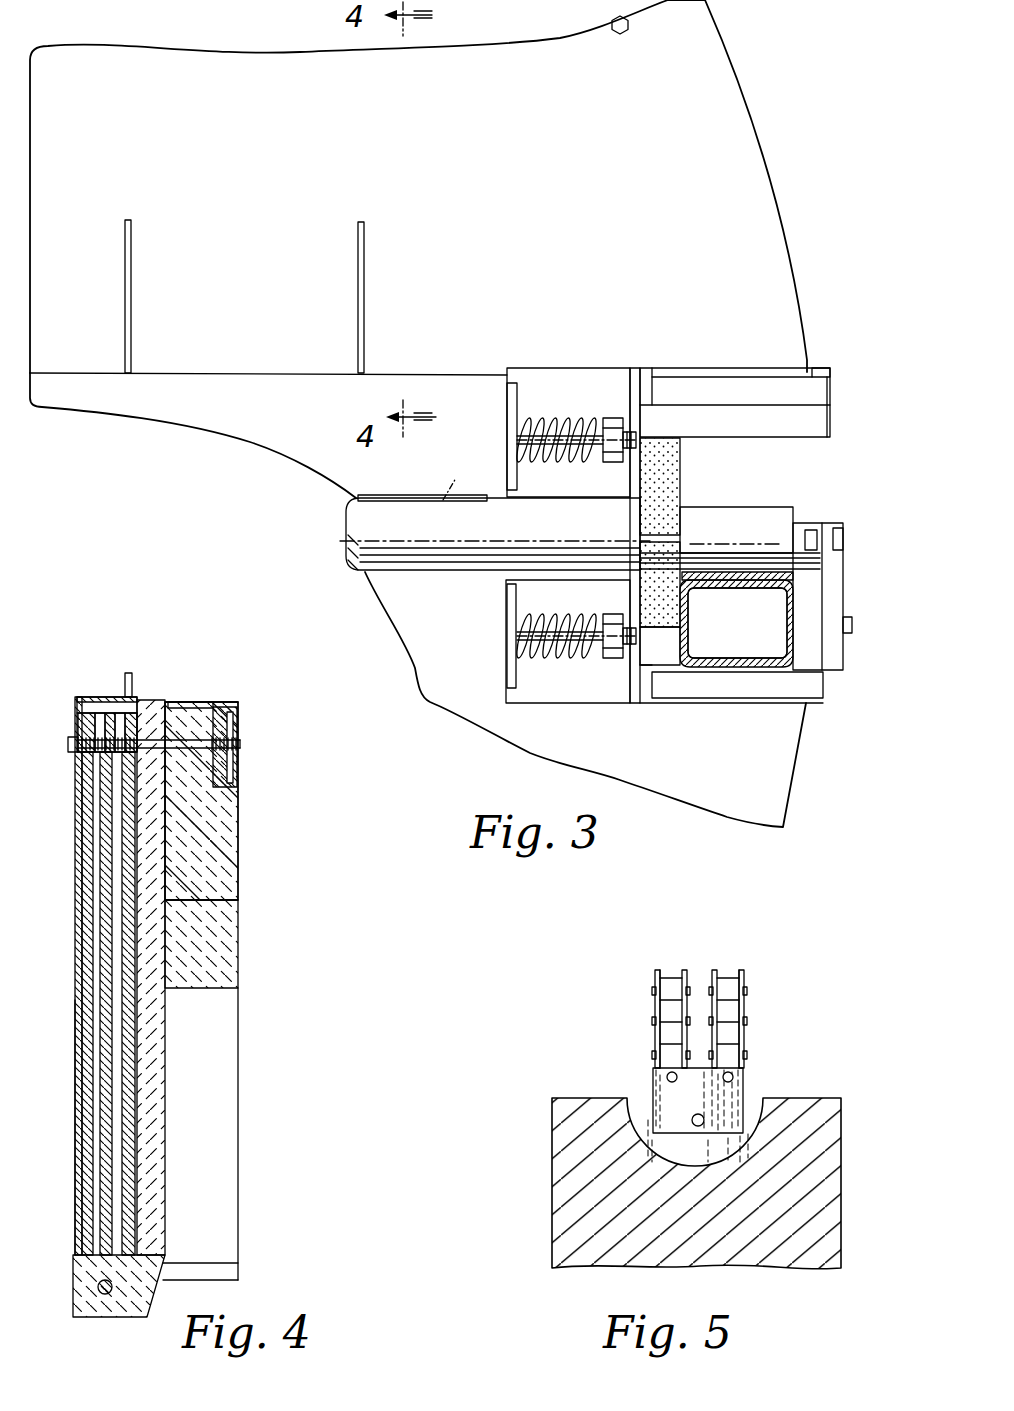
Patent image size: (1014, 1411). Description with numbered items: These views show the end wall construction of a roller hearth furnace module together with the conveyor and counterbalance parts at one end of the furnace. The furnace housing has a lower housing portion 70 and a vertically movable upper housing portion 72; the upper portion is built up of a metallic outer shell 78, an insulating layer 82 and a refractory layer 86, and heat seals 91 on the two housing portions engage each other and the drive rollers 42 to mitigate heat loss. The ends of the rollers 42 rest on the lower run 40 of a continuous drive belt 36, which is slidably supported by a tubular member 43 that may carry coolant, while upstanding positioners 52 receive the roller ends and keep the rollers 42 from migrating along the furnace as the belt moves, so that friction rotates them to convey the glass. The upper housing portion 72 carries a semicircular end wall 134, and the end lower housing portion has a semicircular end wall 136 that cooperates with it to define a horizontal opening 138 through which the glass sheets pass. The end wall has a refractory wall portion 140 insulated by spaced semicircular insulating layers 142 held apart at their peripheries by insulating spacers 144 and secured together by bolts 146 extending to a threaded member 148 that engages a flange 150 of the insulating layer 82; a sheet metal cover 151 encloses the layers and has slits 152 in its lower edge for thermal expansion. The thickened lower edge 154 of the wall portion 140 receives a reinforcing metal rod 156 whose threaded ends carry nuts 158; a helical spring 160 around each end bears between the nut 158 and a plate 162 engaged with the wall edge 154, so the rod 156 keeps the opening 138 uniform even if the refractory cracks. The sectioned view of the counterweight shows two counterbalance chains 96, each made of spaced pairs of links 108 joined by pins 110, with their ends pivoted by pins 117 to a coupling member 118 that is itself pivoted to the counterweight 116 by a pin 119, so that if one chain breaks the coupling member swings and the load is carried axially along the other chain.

In FIG. 3, the drive belt 36 is at (722, 608).
In FIG. 3, the lower run 40 is at (737, 623).
In FIG. 3, the drive roller 42 is at (786, 480).
In FIG. 3, the tubular member 43 is at (805, 618).
In FIG. 3, the positioner 52 is at (830, 560).
In FIG. 3, the lower housing portion 70 is at (806, 797).
In FIG. 3, the upper housing portion 72 is at (776, 176).
In FIG. 4, the outer shell 78 is at (200, 702).
In FIG. 4, the insulating layer 82 is at (210, 872).
In FIG. 4, the refractory layer 86 is at (215, 968).
In FIG. 3, the heat seal 91 is at (670, 528).
In FIG. 5, the chain 96 is at (640, 975).
In FIG. 5, the links 108 is at (655, 1012).
In FIG. 5, the pin 110 is at (732, 1010).
In FIG. 5, the counterweight 116 is at (830, 1208).
In FIG. 5, the pin 117 is at (666, 1077).
In FIG. 5, the coupling member 118 is at (744, 1092).
In FIG. 5, the pin 119 is at (697, 1127).
In FIG. 3, the end wall 134 is at (790, 257).
In FIG. 4, the end wall 134 is at (75, 1090).
In FIG. 3, the end wall 136 is at (804, 745).
In FIG. 3, the horizontal opening 138 is at (400, 504).
In FIG. 4, the wall portion 140 is at (148, 1050).
In FIG. 4, the insulating layers 142 is at (130, 958).
In FIG. 4, the insulating spacer 144 is at (108, 740).
In FIG. 3, the bolt 146 is at (618, 36).
In FIG. 4, the bolt 146 is at (192, 748).
In FIG. 4, the threaded member 148 is at (237, 736).
In FIG. 4, the flange 150 is at (183, 702).
In FIG. 3, the sheet metal cover 151 is at (710, 127).
In FIG. 4, the sheet metal cover 151 is at (76, 880).
In FIG. 3, the slits 152 is at (131, 292).
In FIG. 3, the lower edge 154 is at (495, 475).
In FIG. 4, the lower edge 154 is at (95, 1315).
In FIG. 3, the metal rod 156 is at (548, 425).
In FIG. 4, the metal rod 156 is at (98, 1284).
In FIG. 3, the nut 158 is at (614, 426).
In FIG. 3, the helical spring 160 is at (553, 640).
In FIG. 3, the plate 162 is at (507, 396).